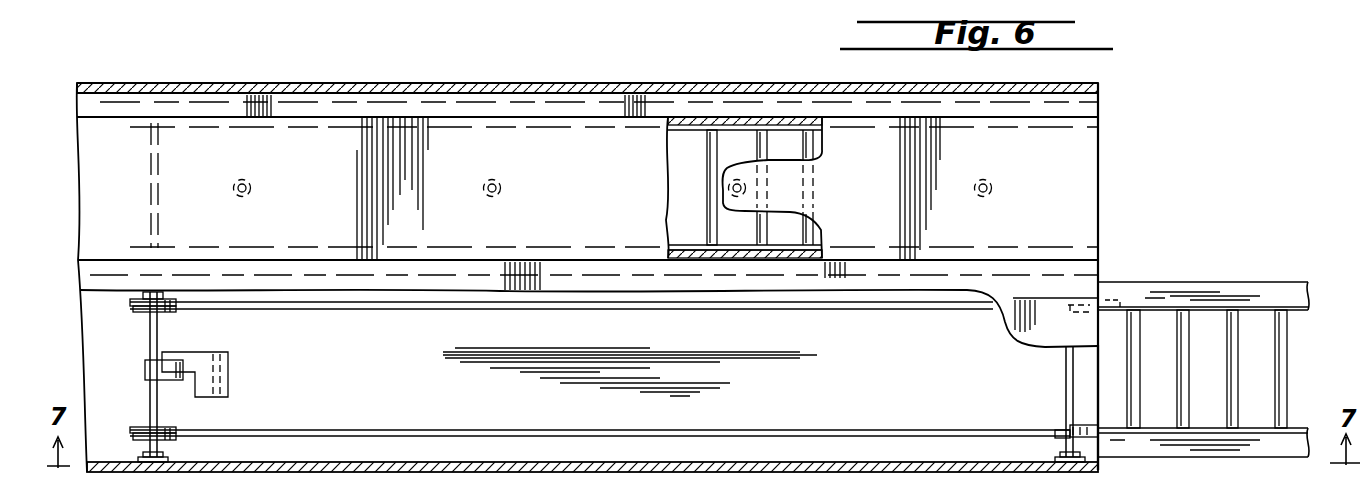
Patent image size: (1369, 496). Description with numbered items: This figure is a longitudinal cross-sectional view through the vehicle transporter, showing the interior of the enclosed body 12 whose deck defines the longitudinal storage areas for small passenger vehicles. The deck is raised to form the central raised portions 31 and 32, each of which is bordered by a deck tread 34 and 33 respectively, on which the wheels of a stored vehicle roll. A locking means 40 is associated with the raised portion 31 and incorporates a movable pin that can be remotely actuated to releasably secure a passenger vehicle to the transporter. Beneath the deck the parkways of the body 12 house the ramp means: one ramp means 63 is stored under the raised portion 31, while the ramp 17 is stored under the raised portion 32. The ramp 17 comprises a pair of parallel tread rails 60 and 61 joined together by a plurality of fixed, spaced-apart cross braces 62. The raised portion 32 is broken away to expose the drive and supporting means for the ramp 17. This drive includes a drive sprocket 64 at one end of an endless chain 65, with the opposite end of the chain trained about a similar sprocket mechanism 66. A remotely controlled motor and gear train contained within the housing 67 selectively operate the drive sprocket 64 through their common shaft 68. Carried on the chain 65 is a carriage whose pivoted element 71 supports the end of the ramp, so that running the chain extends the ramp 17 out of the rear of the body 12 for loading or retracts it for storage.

The body 12 is at (657, 88).
The raised portion of the deck 31 is at (495, 125).
The deck tread 34 is at (413, 107).
The locking means 40 is at (497, 186).
The ramp means 63 is at (743, 134).
The deck tread 33 is at (1087, 267).
The raised portion of the deck 32 is at (1022, 330).
The endless chain 65 is at (371, 418).
The common shaft 68 is at (157, 328).
The housing 67 is at (217, 368).
The drive sprocket 64 is at (167, 427).
The sprocket mechanism 66 is at (1060, 424).
The pivoted element 71 is at (1090, 437).
The tread rail 60 is at (1195, 292).
The cross brace 62 is at (1287, 372).
The tread rail 61 is at (1252, 448).
The ramp 17 is at (1287, 270).